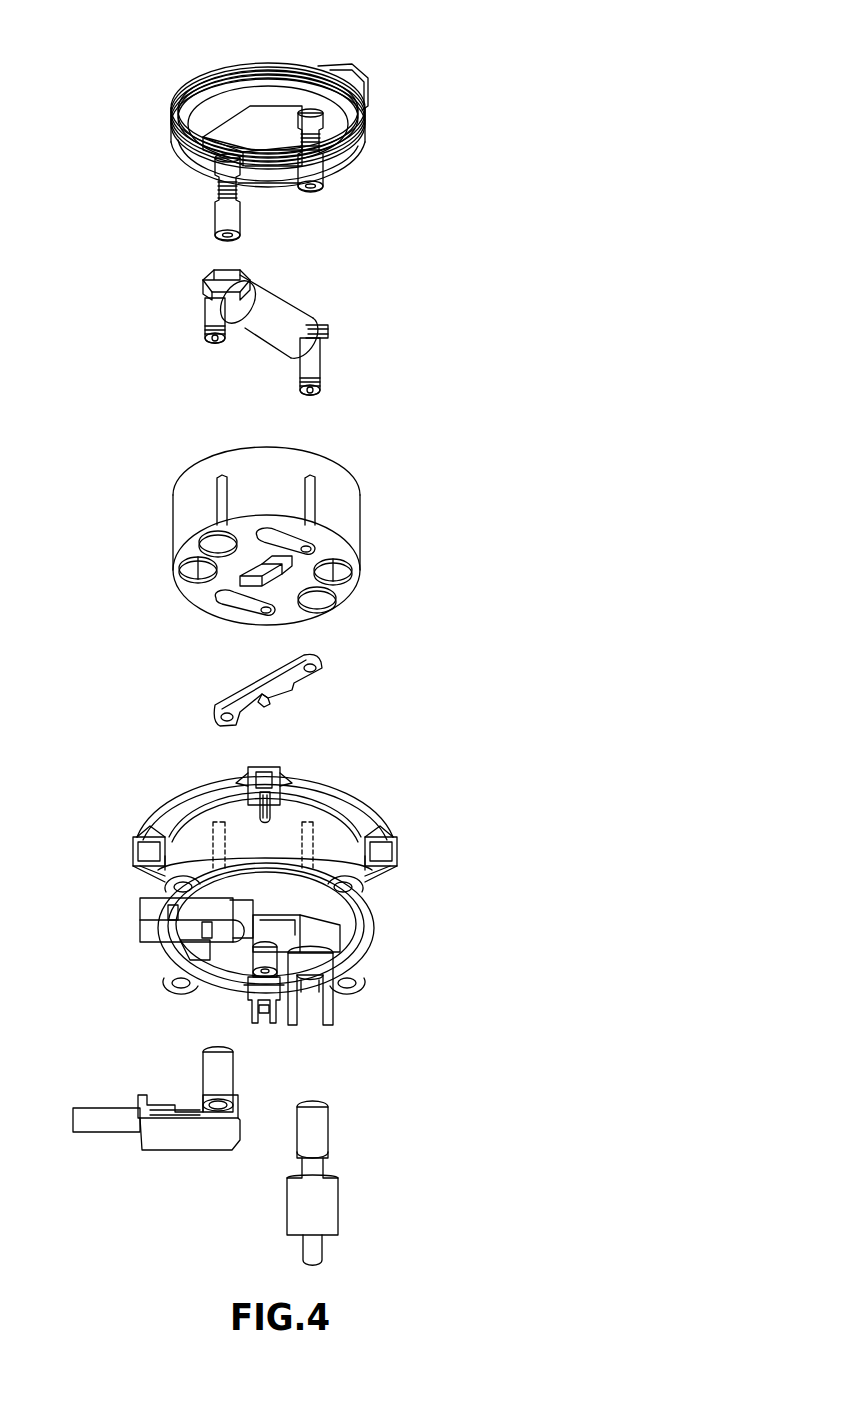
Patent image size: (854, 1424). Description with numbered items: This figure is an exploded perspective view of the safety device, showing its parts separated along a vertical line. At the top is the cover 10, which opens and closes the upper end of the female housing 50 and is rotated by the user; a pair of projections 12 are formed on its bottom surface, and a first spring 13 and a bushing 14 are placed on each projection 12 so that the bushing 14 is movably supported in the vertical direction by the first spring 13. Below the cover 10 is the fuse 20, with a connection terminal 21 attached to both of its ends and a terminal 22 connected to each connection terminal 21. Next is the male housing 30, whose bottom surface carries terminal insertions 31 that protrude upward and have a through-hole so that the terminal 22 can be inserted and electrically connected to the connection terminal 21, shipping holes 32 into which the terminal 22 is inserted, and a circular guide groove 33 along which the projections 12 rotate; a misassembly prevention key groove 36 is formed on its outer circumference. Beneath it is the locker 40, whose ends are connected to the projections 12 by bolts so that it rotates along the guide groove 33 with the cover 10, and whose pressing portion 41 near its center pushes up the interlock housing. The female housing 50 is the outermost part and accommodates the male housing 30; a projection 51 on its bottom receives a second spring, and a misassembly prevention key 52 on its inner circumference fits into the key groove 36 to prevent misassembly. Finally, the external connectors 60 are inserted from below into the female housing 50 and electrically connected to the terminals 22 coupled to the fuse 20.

The cover 10 is at (318, 70).
The projection 12 is at (360, 153).
The first spring 13 is at (342, 170).
The bushing 14 is at (332, 182).
The fuse 20 is at (276, 300).
The connection terminal 21 is at (330, 330).
The terminal 22 is at (318, 364).
The male housing 30 is at (350, 514).
The terminal insertion 31 is at (214, 544).
The shipping hole 32 is at (200, 574).
The guide groove 33 is at (240, 612).
The misassembly prevention key groove 36 is at (316, 496).
The locker 40 is at (298, 690).
The pressing portion 41 is at (262, 707).
The female housing 50 is at (386, 908).
The projection 51 is at (256, 958).
The misassembly prevention key 52 is at (320, 838).
The external connector 60 is at (220, 1136).